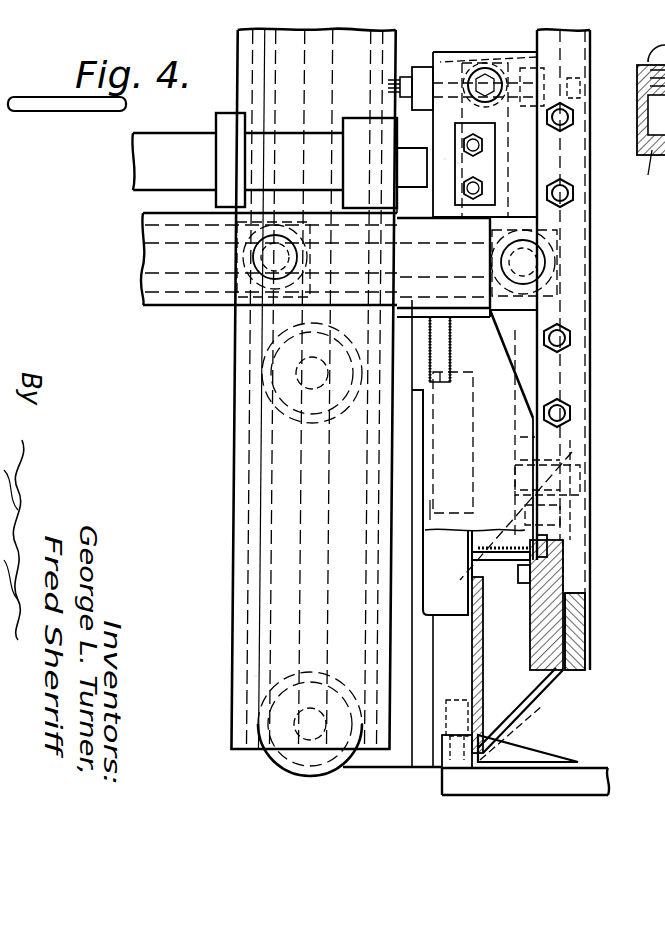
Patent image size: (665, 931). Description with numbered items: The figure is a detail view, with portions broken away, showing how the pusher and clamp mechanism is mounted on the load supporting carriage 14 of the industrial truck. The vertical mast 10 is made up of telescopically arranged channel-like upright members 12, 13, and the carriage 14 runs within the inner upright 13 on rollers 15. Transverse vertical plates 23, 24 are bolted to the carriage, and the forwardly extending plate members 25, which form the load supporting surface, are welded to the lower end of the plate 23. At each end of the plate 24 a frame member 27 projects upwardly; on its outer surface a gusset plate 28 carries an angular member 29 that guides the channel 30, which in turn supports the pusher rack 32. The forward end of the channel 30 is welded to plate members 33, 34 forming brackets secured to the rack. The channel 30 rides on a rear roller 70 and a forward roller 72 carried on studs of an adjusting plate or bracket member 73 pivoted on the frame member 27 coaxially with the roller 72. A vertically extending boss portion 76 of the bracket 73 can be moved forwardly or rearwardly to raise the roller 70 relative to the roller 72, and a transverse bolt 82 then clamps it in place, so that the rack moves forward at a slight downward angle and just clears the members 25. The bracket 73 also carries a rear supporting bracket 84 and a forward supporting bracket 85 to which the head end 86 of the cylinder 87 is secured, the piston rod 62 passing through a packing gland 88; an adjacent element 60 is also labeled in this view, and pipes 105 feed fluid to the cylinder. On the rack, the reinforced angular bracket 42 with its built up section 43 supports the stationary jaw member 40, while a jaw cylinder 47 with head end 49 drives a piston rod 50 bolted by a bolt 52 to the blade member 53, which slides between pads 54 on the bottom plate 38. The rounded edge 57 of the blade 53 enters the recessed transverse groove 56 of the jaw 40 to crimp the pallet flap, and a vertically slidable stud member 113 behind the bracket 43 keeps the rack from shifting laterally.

The vertical mast 10 is at (234, 504).
The upright member 12 is at (234, 412).
The inner upright member 13 is at (256, 676).
The load supporting carriage 14 is at (398, 771).
The rollers 15 is at (262, 364).
The vertically arranged plate 23 is at (444, 762).
The vertically arranged plate 24 is at (574, 452).
The forwardly extending plate members 25 is at (595, 788).
The frame member 27 is at (448, 60).
The gusset plate 28 is at (443, 372).
The angular member 29 is at (478, 320).
The channel 30 is at (178, 300).
The pusher rack 32 is at (595, 192).
The plate member 33 is at (481, 212).
The plate member 34 is at (518, 350).
The bottom plate 38 is at (590, 640).
The stationary jaw member 40 is at (525, 756).
The reinforced angular bracket 42 is at (497, 546).
The built up section 43 is at (501, 650).
The jaw cylinder 47 is at (522, 437).
The head end 49 is at (576, 497).
The piston rod 50 is at (548, 541).
The bolt 52 is at (521, 582).
The blade member 53 is at (568, 594).
The pad 54 is at (588, 610).
The recessed transverse groove 56 is at (570, 753).
The rounded edge 57 is at (565, 674).
The link 60 is at (457, 163).
The piston rod 62 is at (443, 159).
The rear roller 70 is at (248, 280).
The forward roller 72 is at (592, 243).
The adjusting plate or bracket member 73 is at (232, 114).
The vertically extending boss portion 76 is at (540, 57).
The transverse bolt 82 is at (486, 70).
The rear supporting bracket 84 is at (224, 127).
The forward supporting bracket 85 is at (419, 66).
The head end 86 is at (355, 125).
The cylinder 87 is at (283, 142).
The packing gland 88 is at (412, 220).
The pipe 105 is at (92, 108).
The vertically slidable stud member 113 is at (529, 730).